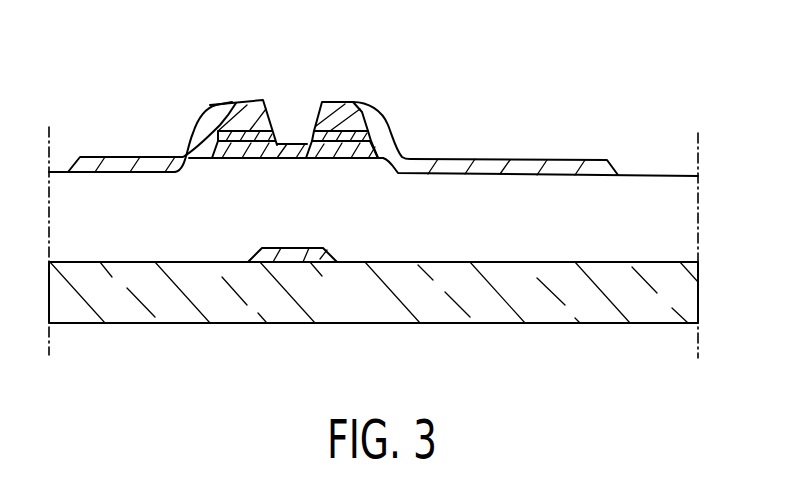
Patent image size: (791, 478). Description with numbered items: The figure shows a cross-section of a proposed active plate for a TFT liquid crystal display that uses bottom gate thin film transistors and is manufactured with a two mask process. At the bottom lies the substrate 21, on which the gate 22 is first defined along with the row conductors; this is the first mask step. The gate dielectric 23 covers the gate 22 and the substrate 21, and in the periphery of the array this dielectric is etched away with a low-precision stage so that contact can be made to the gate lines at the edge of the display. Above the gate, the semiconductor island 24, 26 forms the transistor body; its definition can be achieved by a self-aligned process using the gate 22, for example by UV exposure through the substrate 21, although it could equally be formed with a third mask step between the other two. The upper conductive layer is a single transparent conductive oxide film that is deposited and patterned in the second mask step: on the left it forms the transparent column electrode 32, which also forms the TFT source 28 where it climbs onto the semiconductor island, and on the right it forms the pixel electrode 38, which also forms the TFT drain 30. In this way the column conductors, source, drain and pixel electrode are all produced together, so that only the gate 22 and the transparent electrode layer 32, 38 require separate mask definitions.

The substrate 21 is at (512, 305).
The gate 22 is at (285, 258).
The gate dielectric 23 is at (677, 215).
The semiconductor island 24 is at (372, 152).
The semiconductor island 26 is at (360, 130).
The TFT source 28 is at (242, 110).
The TFT drain 30 is at (335, 110).
The transparent column electrode 32 is at (120, 162).
The pixel electrode 38 is at (562, 167).